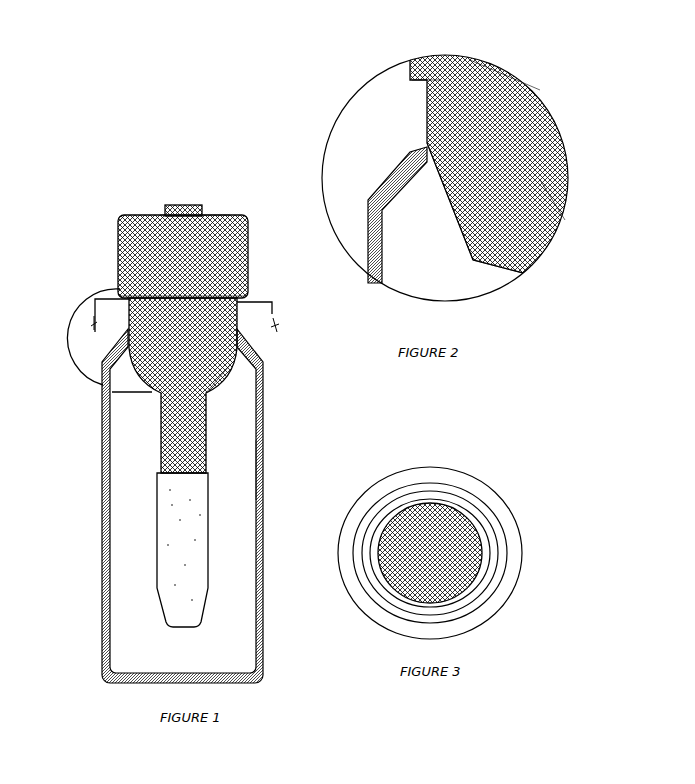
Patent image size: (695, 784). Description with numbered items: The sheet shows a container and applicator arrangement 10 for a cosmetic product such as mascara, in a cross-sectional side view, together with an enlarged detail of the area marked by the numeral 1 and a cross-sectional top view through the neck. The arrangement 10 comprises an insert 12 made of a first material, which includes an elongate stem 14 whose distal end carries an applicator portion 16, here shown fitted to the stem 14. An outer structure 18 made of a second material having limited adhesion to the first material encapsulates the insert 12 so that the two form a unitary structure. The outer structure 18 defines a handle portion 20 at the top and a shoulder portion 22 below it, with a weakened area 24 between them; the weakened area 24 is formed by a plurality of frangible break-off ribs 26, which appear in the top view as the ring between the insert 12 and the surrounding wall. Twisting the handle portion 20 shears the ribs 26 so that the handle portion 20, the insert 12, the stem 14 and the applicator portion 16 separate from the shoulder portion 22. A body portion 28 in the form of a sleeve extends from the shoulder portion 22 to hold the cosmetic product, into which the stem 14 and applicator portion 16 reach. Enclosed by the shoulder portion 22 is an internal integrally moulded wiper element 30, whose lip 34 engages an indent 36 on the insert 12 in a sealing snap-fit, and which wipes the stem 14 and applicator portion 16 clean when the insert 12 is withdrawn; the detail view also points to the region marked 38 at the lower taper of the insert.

In FIG. 1, the detail area 1 is at (90, 380).
In FIG. 1, the container and applicator arrangement 10 is at (152, 178).
In FIG. 1, the insert 12 is at (181, 205).
In FIG. 2, the insert 12 is at (525, 83).
In FIG. 3, the insert 12 is at (480, 522).
In FIG. 1, the elongate stem 14 is at (201, 450).
In FIG. 1, the applicator portion 16 is at (209, 510).
In FIG. 1, the outer structure 18 is at (221, 213).
In FIG. 1, the handle portion 20 is at (250, 248).
In FIG. 2, the handle portion 20 is at (420, 55).
In FIG. 1, the shoulder portion 22 is at (264, 354).
In FIG. 2, the shoulder portion 22 is at (383, 184).
In FIG. 3, the shoulder portion 22 is at (501, 606).
In FIG. 1, the weakened area 24 is at (124, 295).
In FIG. 2, the weakened area 24 is at (424, 90).
In FIG. 3, the weakened area 24 is at (489, 530).
In FIG. 1, the break-off ribs 26 is at (185, 324).
In FIG. 3, the break-off ribs 26 is at (497, 549).
In FIG. 1, the body portion 28 is at (264, 472).
In FIG. 1, the wiper element 30 is at (152, 395).
In FIG. 2, the wiper element 30 is at (475, 258).
In FIG. 2, the lip 34 is at (524, 272).
In FIG. 2, the indent 36 is at (566, 205).
In FIG. 1, the plug taper 38 is at (216, 383).